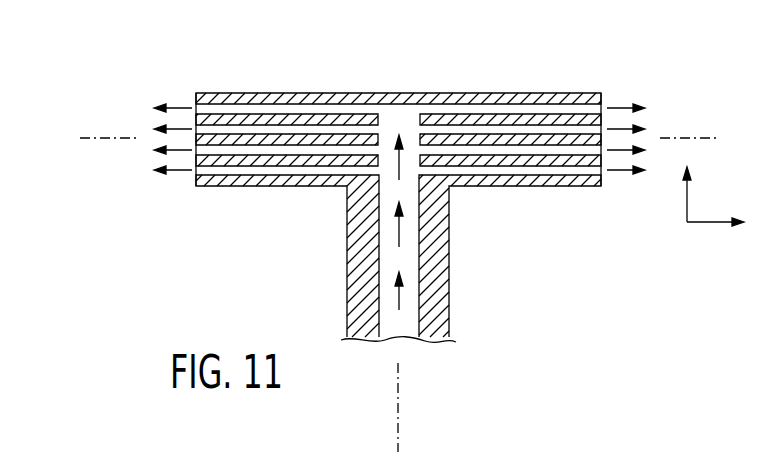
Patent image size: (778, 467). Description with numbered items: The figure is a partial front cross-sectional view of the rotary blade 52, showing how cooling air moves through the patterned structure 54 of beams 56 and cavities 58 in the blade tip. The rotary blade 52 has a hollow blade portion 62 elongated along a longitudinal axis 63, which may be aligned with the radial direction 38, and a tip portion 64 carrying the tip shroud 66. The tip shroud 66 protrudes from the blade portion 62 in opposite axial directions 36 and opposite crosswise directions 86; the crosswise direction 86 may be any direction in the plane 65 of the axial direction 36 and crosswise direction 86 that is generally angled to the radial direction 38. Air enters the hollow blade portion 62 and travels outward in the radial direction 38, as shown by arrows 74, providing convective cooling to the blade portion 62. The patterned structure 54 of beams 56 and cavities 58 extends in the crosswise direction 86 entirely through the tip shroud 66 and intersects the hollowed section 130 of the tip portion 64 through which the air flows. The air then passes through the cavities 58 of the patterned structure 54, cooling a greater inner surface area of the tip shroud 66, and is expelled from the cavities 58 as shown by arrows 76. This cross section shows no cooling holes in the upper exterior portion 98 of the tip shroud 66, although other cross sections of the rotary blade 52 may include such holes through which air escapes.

The axial direction 36 is at (683, 223).
The radial direction 38 is at (689, 199).
The crosswise direction 86 is at (720, 220).
The rotary blade 52 is at (645, 66).
The patterned structure 54 is at (295, 127).
The beams 56 is at (567, 120).
The cavities 58 is at (467, 112).
The blade portion 62 is at (449, 217).
The longitudinal axis 63 is at (399, 406).
The tip portion 64 is at (540, 187).
The plane 65 is at (100, 137).
The tip shroud 66 is at (196, 73).
The arrows 74 is at (396, 180).
The arrows 76 is at (176, 129).
The upper exterior portion 98 is at (333, 93).
The hollowed section 130 is at (379, 262).